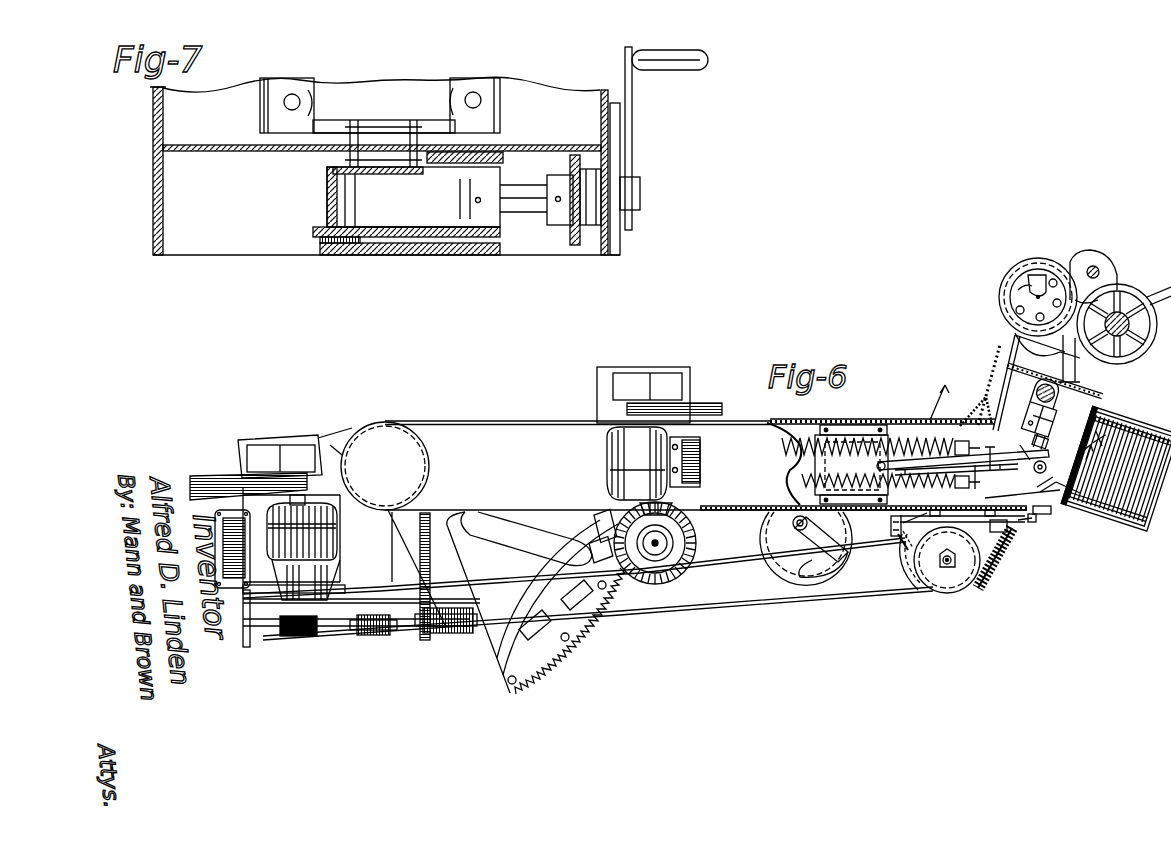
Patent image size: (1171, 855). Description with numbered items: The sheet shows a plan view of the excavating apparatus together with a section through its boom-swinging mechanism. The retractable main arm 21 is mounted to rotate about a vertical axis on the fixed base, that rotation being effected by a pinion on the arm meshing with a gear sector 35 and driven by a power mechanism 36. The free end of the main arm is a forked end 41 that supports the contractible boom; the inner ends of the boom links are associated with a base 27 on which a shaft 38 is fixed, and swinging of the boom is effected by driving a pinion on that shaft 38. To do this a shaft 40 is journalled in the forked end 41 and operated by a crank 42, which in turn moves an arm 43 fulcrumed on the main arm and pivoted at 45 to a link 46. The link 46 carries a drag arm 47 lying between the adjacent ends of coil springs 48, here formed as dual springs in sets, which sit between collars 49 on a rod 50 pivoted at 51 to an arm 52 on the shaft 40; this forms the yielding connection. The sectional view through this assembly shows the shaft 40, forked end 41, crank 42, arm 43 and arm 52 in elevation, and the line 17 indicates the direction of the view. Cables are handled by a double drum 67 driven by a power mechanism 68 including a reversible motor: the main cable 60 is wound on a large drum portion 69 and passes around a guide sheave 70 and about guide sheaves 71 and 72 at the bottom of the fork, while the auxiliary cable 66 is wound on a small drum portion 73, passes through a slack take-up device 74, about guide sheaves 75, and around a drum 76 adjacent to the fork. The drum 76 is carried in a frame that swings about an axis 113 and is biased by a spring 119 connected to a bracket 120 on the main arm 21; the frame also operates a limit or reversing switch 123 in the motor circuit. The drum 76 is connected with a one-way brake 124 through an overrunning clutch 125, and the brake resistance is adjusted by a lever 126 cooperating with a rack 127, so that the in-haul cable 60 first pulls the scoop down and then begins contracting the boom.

In FIG. 6, the section arrow 17 is at (961, 405).
In FIG. 6, the main arm 21 is at (490, 428).
In FIG. 7, the base 27 is at (390, 82).
In FIG. 6, the gear sector 35 is at (562, 645).
In FIG. 6, the power mechanism 36 is at (607, 452).
In FIG. 6, the shaft 38 is at (1106, 268).
In FIG. 7, the shaft 40 is at (365, 140).
In FIG. 6, the shaft 40 is at (1035, 388).
In FIG. 7, the forked end 41 is at (153, 197).
In FIG. 6, the forked end 41 is at (1100, 390).
In FIG. 7, the crank 42 is at (633, 104).
In FIG. 6, the crank 42 is at (1108, 410).
In FIG. 7, the arm 43 is at (327, 217).
In FIG. 6, the arm 43 is at (1052, 420).
In FIG. 6, the pivot 45 is at (1042, 454).
In FIG. 6, the link 46 is at (996, 444).
In FIG. 6, the drag arm 47 is at (860, 430).
In FIG. 6, the coil springs 48 is at (780, 455).
In FIG. 6, the collars 49 is at (962, 444).
In FIG. 6, the rod 50 is at (986, 473).
In FIG. 6, the pivot 51 is at (1038, 473).
In FIG. 7, the arm 52 is at (505, 158).
In FIG. 6, the arm 52 is at (1028, 448).
In FIG. 6, the main cable 60 is at (535, 580).
In FIG. 6, the auxiliary cable 66 is at (338, 640).
In FIG. 6, the double drum 67 is at (262, 608).
In FIG. 6, the power mechanism 68 is at (330, 541).
In FIG. 6, the large drum portion 69 is at (330, 604).
In FIG. 6, the guide sheave 70 is at (765, 525).
In FIG. 6, the guide sheave 71 is at (1150, 346).
In FIG. 6, the guide sheave 72 is at (1000, 315).
In FIG. 6, the small drum portion 73 is at (285, 640).
In FIG. 6, the slack take-up device 74 is at (372, 640).
In FIG. 6, the guide sheaves 75 is at (460, 636).
In FIG. 6, the drum 76 is at (932, 594).
In FIG. 6, the axis 113 is at (944, 552).
In FIG. 6, the spring 119 is at (996, 558).
In FIG. 6, the bracket 120 is at (1045, 511).
In FIG. 6, the limit or reversing switch 123 is at (891, 529).
In FIG. 6, the one-way brake 124 is at (902, 552).
In FIG. 6, the overrunning clutch 125 is at (904, 575).
In FIG. 6, the lever 126 is at (1030, 522).
In FIG. 6, the rack 127 is at (992, 502).